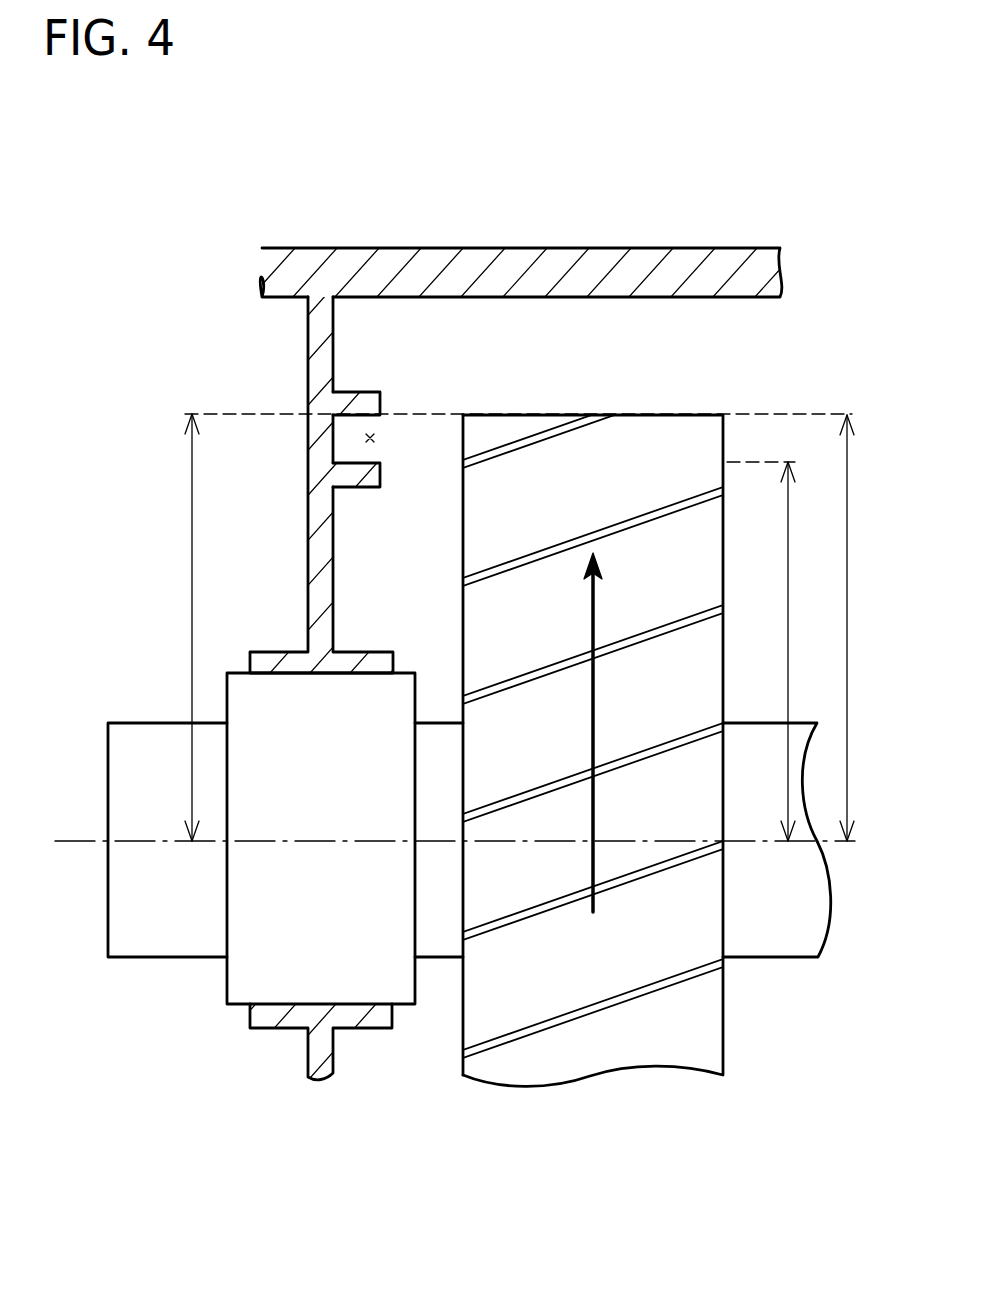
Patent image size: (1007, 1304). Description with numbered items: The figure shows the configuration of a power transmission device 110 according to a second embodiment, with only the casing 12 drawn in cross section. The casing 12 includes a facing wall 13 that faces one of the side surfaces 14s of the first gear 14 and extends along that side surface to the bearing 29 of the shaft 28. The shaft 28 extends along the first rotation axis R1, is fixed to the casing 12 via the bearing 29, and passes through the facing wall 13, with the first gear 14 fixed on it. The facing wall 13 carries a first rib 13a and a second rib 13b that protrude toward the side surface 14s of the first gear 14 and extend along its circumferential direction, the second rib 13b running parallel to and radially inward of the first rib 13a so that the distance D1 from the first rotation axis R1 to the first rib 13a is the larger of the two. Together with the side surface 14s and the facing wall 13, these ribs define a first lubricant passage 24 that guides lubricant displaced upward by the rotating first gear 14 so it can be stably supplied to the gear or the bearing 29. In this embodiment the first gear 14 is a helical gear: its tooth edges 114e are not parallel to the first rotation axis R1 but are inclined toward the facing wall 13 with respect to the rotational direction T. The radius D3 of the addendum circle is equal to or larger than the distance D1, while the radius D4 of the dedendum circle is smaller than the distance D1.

The power transmission device 110 is at (782, 223).
The casing 12 is at (693, 262).
The facing wall 13 is at (308, 345).
The first rib 13a is at (357, 392).
The second rib 13b is at (350, 490).
The first gear 14 is at (738, 504).
The tooth edges 114e is at (523, 433).
The side surfaces 14s is at (460, 628).
The first lubricant passage 24 is at (370, 438).
The shaft 28 is at (131, 958).
The bearing 29 is at (240, 1007).
The rotational direction T is at (597, 817).
The distance D1 is at (499, 627).
The radius of addendum circle D3 is at (779, 651).
The radius of dedendum circle D4 is at (865, 628).
The first rotation axis R1 is at (431, 840).